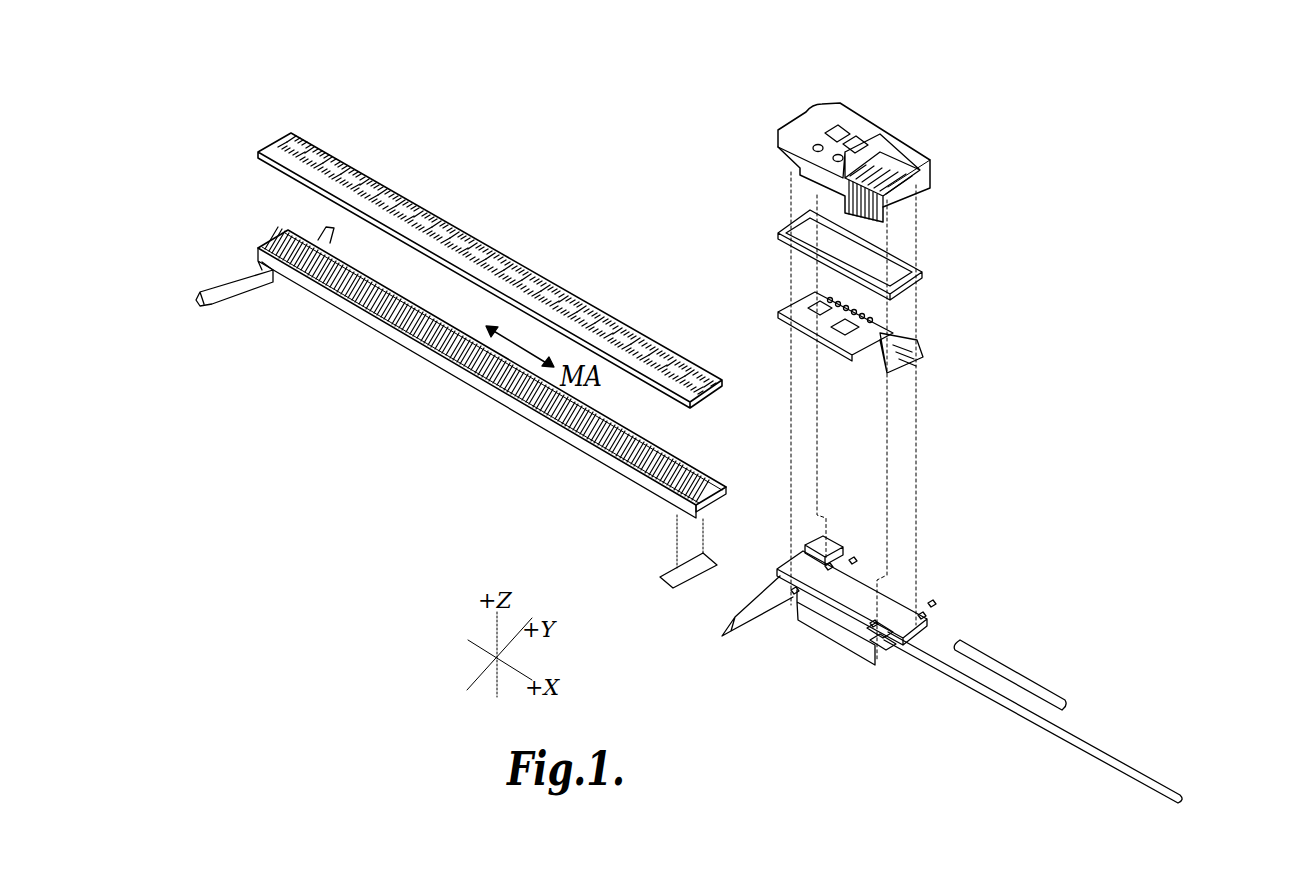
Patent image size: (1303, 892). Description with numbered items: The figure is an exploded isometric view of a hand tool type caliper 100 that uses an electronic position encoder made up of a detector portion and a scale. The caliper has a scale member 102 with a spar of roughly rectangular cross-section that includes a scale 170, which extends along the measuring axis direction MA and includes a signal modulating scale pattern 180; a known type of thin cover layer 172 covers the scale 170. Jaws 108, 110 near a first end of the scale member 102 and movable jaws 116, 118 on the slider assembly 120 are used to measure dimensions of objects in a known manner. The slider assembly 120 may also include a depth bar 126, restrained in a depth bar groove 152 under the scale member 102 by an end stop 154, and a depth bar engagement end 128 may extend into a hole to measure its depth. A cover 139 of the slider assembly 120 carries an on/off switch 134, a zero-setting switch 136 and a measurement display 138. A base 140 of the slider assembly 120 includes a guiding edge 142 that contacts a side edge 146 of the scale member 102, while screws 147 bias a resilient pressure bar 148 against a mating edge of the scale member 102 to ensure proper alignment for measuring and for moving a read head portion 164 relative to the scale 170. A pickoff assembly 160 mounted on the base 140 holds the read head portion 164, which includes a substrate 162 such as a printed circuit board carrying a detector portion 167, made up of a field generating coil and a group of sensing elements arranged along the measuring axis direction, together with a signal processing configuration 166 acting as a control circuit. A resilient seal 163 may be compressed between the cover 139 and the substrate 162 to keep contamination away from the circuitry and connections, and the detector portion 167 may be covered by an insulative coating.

The hand tool type caliper 100 is at (380, 500).
The scale member 102 is at (367, 332).
The jaw 108 is at (217, 285).
The jaw 110 is at (322, 241).
The movable jaw 116 is at (767, 607).
The movable jaw 118 is at (818, 543).
The slider assembly 120 is at (1103, 233).
The depth bar 126 is at (1074, 717).
The depth bar engagement end 128 is at (1185, 800).
The on/off switch 134 is at (815, 143).
The zero-setting switch 136 is at (842, 156).
The measurement display 138 is at (840, 128).
The cover 139 is at (977, 157).
The base 140 is at (850, 645).
The guiding edge 142 is at (930, 637).
The side edge 146 is at (492, 366).
The screws 147 is at (931, 606).
The resilient pressure bar 148 is at (1032, 683).
The depth bar groove 152 is at (710, 504).
The end stop 154 is at (673, 573).
The pickoff assembly 160 is at (1007, 133).
The substrate 162 is at (809, 308).
The resilient seal 163 is at (913, 262).
The read head portion 164 is at (793, 314).
The signal processing configuration 166 is at (810, 297).
The detector portion 167 is at (873, 357).
The scale 170 is at (492, 366).
The cover layer 172 is at (499, 250).
The signal modulating scale pattern 180 is at (560, 435).